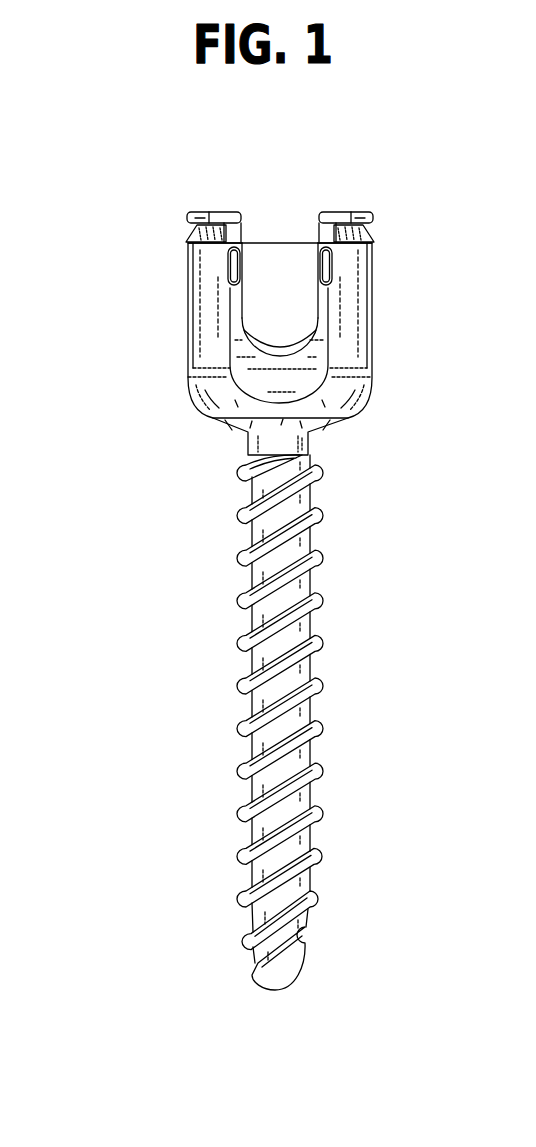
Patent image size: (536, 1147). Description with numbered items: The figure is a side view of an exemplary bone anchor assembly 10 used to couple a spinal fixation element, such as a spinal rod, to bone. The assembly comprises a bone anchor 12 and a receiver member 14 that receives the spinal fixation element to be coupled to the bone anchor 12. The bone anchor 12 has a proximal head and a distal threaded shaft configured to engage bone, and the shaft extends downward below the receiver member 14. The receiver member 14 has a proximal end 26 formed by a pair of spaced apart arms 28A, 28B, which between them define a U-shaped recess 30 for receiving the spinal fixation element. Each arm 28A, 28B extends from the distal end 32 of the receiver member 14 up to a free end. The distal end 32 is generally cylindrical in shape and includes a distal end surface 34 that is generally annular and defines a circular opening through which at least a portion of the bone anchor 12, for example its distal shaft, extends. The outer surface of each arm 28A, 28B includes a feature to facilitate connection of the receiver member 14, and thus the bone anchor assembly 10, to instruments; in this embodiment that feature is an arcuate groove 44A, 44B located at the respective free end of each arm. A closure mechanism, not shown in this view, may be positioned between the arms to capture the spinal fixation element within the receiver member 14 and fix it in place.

The bone anchor assembly 10 is at (137, 494).
The bone anchor 12 is at (366, 515).
The receiver member 14 is at (372, 290).
The proximal end 26 is at (404, 224).
The arm 28A is at (190, 265).
The arm 28B is at (363, 263).
The recess 30 is at (264, 238).
The distal end 32 is at (205, 399).
The distal end surface 34 is at (228, 418).
The arcuate groove 44A is at (190, 235).
The arcuate groove 44B is at (367, 232).